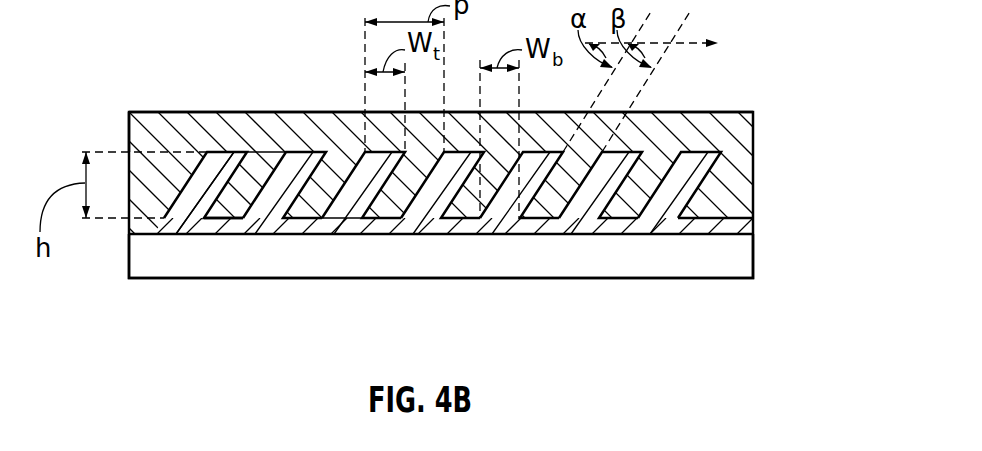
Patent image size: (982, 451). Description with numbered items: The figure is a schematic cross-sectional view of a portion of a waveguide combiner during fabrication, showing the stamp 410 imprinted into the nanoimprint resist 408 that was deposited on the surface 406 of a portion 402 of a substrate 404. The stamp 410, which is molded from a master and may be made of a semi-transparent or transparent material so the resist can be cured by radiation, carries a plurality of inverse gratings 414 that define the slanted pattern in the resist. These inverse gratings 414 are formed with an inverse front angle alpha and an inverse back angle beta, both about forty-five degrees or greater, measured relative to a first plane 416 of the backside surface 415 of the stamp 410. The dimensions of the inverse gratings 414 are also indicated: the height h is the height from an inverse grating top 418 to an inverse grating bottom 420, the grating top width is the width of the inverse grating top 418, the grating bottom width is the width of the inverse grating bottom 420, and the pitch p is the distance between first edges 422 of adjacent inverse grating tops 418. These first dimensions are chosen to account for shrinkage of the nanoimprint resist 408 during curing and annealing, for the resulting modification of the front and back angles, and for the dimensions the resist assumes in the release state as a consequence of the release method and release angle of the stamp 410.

The portion of a substrate 402 is at (754, 295).
The substrate 404 is at (750, 263).
The surface 406 is at (733, 222).
The nanoimprint resist 408 is at (750, 227).
The stamp 410 is at (705, 113).
The inverse gratings 414 is at (256, 178).
The backside surface 415 is at (150, 112).
The first plane 416 is at (695, 43).
The inverse grating top 418 is at (227, 220).
The inverse grating bottom 420 is at (268, 148).
The first edges 422 is at (357, 220).